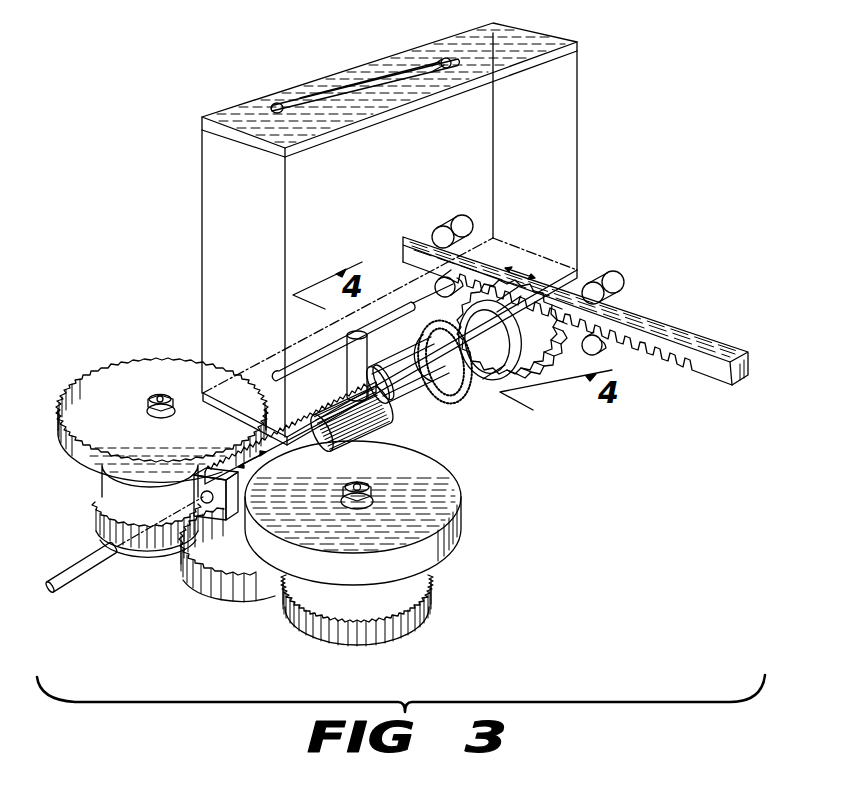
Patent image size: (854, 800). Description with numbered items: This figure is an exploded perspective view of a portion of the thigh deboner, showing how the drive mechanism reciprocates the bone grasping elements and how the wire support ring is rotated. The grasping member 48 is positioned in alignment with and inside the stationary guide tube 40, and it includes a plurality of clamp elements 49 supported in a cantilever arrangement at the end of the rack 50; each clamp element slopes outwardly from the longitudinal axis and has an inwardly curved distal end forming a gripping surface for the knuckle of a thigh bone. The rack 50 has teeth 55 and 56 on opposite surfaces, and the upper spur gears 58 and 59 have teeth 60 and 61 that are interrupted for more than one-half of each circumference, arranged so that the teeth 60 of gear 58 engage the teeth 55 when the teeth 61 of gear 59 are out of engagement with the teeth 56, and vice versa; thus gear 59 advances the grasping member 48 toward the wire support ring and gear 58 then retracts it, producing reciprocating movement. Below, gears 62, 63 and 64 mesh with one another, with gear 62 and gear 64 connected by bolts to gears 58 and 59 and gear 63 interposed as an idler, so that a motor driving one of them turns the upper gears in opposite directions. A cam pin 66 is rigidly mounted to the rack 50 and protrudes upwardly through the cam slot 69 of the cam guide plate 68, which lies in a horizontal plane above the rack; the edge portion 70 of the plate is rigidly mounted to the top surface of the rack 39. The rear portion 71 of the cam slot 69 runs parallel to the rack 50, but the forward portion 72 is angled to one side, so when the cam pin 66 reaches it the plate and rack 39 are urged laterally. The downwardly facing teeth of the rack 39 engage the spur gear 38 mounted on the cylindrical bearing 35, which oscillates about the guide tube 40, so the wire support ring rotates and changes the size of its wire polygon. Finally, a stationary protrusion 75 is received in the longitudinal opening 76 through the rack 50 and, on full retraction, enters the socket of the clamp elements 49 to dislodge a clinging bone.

The cylindrical bearing 35 is at (500, 372).
The spur gear 38 is at (533, 358).
The rack 39 is at (423, 232).
The stationary guide tube 40 is at (474, 385).
The grasping member 48 is at (403, 410).
The clamp elements 49 is at (443, 404).
The rack 50 is at (297, 418).
The teeth 55 is at (238, 447).
The teeth 56 is at (328, 439).
The spur gear 58 is at (156, 368).
The spur gear 59 is at (445, 510).
The teeth 60 is at (63, 453).
The teeth 61 is at (263, 597).
The gear 62 is at (97, 508).
The gear 63 is at (198, 578).
The gear 64 is at (318, 633).
The cam pin 66 is at (362, 361).
The cam guide plate 68 is at (282, 98).
The cam slot 69 is at (352, 84).
The edge portion 70 is at (512, 34).
The rear portion 71 is at (332, 95).
The forward portion 72 is at (433, 69).
The stationary protrusion 75 is at (70, 585).
The longitudinal opening 76 is at (173, 551).